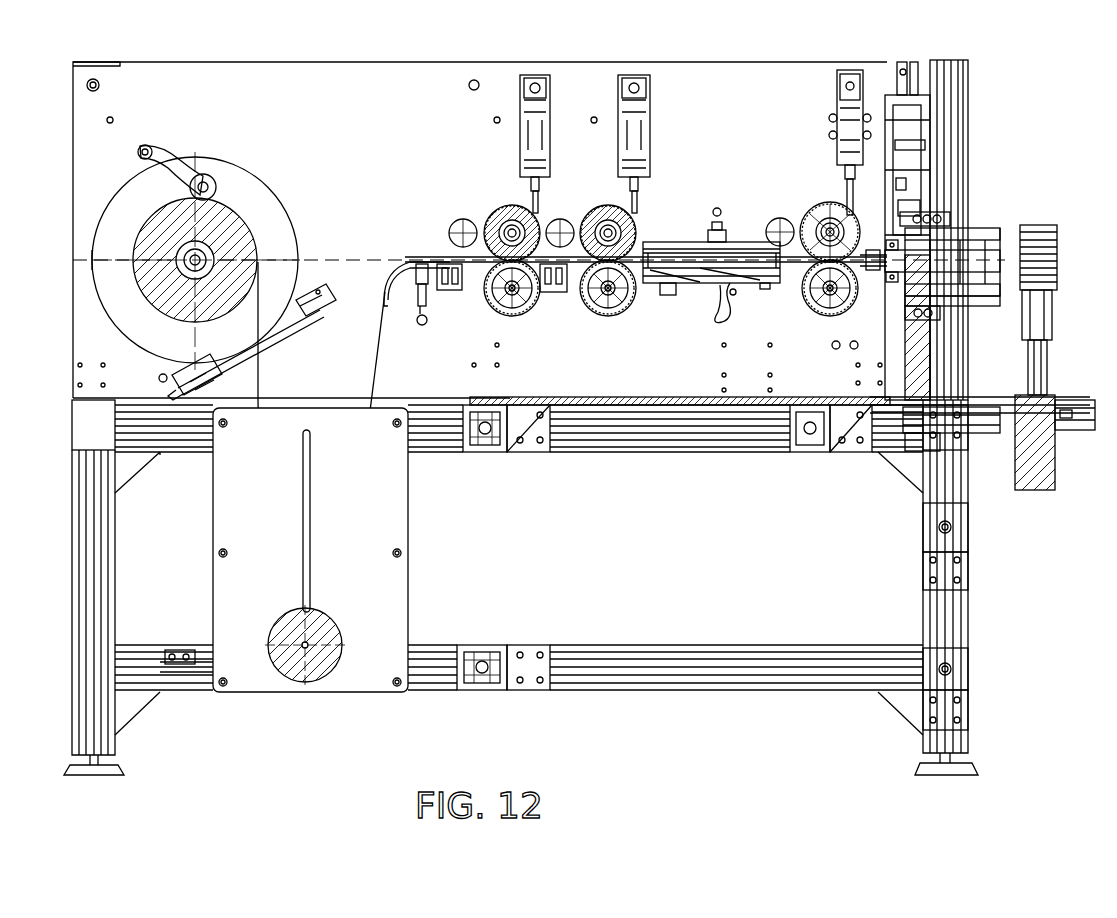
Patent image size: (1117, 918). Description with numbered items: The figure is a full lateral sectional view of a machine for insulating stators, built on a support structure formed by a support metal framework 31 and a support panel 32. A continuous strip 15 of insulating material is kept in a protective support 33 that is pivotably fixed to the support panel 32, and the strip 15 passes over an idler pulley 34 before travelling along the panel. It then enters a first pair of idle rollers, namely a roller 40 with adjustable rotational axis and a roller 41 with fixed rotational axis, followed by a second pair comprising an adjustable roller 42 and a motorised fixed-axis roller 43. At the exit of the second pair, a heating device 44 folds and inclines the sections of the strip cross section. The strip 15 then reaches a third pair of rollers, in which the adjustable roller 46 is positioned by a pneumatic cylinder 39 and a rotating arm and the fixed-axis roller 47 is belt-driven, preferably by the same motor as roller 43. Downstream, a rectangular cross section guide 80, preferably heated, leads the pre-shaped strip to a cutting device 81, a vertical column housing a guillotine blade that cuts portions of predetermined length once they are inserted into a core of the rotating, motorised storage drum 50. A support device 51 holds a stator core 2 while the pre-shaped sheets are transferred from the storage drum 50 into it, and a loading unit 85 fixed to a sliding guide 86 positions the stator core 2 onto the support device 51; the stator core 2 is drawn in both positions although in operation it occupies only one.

The stator core 2 is at (1040, 226).
The continuous strip 15 is at (265, 352).
The support metal framework 31 is at (595, 656).
The support panel 32 is at (307, 73).
The protective support 33 is at (278, 220).
The idler pulley 34 is at (320, 628).
The pneumatic cylinder 39 is at (855, 78).
The roller with adjustable rotational axis 40 is at (497, 208).
The roller with fixed rotational axis 41 is at (495, 300).
The roller with adjustable rotational axis 42 is at (600, 213).
The roller with fixed rotational axis 43 is at (600, 300).
The heating device 44 is at (660, 242).
The roller with adjustable rotational axis 46 is at (806, 218).
The roller with fixed rotational axis 47 is at (808, 310).
The rotating storage drum 50 is at (895, 365).
The support device 51 is at (995, 232).
The rectangular cross section guide 80 is at (857, 263).
The cutting device 81 is at (905, 186).
The loading unit 85 is at (1040, 375).
The sliding guide 86 is at (975, 422).